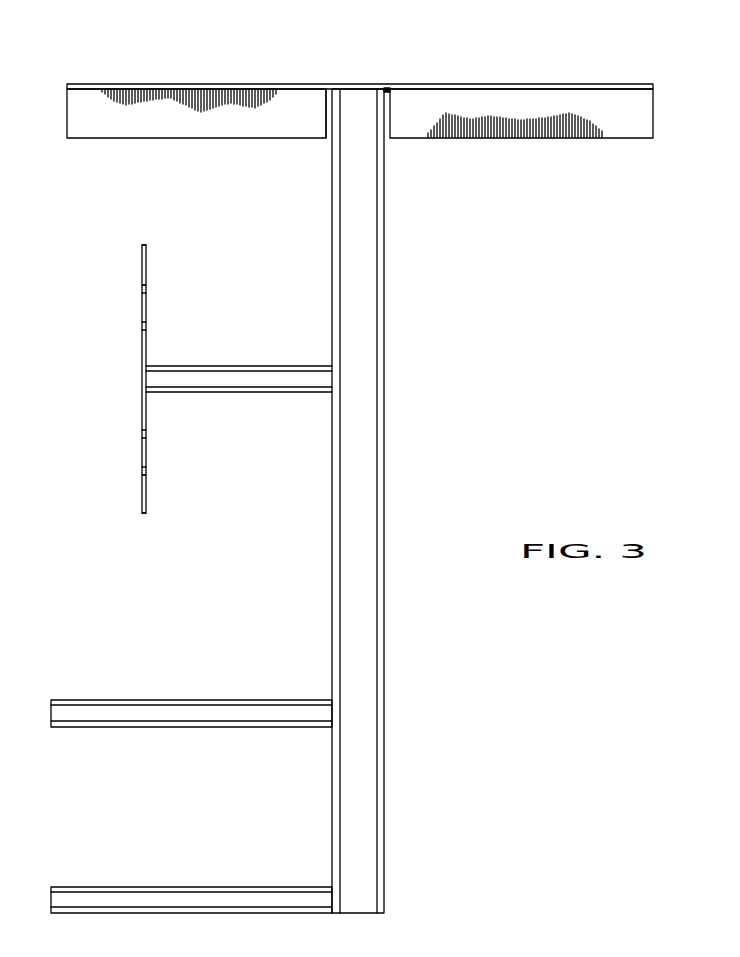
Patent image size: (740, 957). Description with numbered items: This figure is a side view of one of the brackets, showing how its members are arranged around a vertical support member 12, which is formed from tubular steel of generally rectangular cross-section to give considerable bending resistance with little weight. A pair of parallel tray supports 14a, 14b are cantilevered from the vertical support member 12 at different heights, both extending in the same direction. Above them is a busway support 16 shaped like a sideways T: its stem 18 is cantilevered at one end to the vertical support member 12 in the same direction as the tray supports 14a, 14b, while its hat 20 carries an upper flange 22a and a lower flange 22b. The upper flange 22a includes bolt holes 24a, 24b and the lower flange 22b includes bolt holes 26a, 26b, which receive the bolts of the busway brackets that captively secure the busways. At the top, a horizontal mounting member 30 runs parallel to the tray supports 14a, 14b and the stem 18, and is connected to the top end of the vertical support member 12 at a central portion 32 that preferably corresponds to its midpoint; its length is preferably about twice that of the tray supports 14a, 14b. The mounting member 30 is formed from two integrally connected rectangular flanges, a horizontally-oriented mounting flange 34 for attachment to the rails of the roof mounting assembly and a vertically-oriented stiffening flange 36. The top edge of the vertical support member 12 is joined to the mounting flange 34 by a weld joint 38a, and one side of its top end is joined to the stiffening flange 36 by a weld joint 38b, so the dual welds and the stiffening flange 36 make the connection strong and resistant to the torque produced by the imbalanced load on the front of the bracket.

The vertical support member 12 is at (357, 471).
The tray support 14a is at (162, 715).
The tray support 14b is at (167, 900).
The busway support 16 is at (224, 358).
The stem 18 is at (245, 378).
The hat 20 is at (134, 376).
The upper flange 22a is at (142, 248).
The lower flange 22b is at (142, 497).
The bolt hole 24a is at (142, 289).
The bolt hole 24b is at (142, 325).
The bolt hole 26a is at (142, 432).
The bolt hole 26b is at (142, 468).
The horizontal mounting member 30 is at (151, 125).
The central portion 32 is at (362, 84).
The mounting flange 34 is at (637, 84).
The stiffening flange 36 is at (627, 120).
The weld joint 38a is at (389, 90).
The weld joint 38b is at (326, 121).